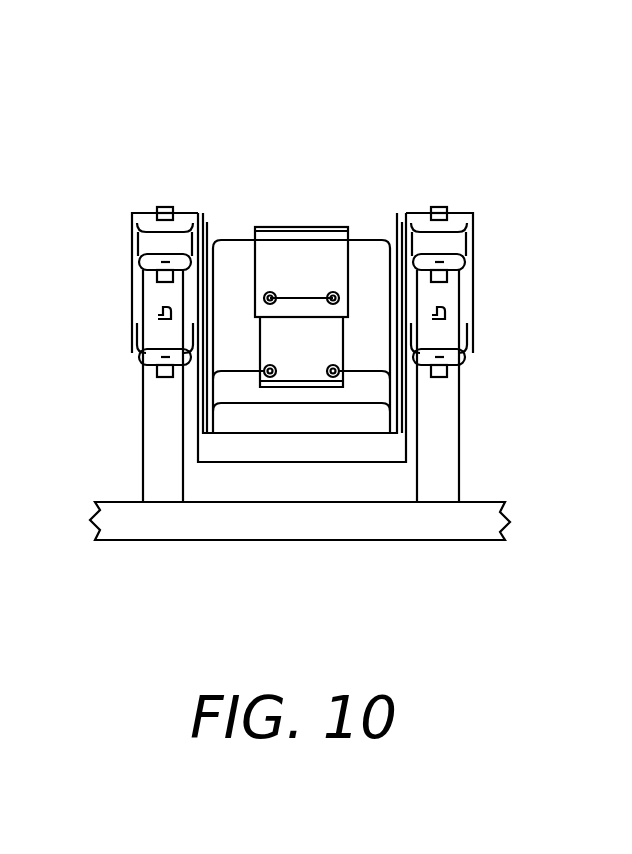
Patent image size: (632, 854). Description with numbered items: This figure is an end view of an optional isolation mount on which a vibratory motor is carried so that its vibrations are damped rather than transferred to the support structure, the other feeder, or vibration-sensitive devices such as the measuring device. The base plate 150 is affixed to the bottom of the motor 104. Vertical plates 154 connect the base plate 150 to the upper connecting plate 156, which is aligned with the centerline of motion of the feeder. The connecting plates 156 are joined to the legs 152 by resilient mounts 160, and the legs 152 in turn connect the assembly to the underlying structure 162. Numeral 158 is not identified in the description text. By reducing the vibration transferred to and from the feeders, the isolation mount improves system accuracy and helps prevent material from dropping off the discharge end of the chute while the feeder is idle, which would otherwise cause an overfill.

The motor 104 is at (222, 240).
The base plate 150 is at (328, 462).
The legs 152 is at (143, 478).
The vertical plates 154 is at (400, 212).
The upper connecting plate 156 is at (132, 218).
The clamp cylinder 158 is at (137, 240).
The resilient mounts 160 is at (163, 210).
The underlying structure 162 is at (218, 540).